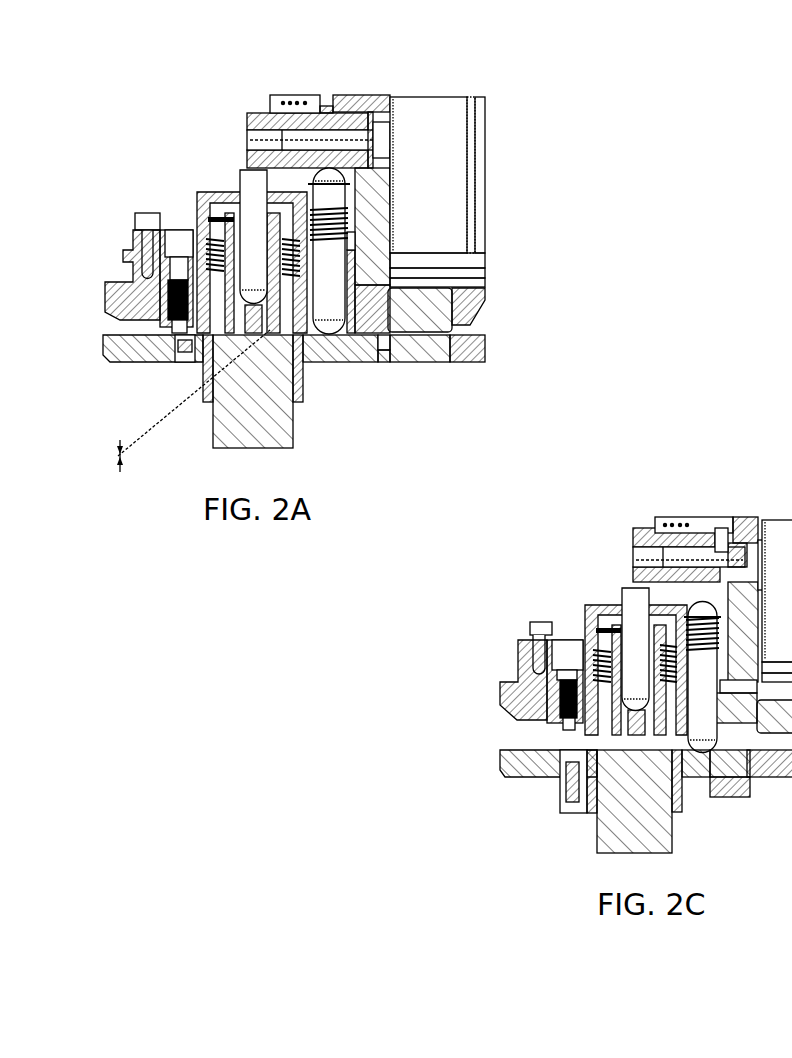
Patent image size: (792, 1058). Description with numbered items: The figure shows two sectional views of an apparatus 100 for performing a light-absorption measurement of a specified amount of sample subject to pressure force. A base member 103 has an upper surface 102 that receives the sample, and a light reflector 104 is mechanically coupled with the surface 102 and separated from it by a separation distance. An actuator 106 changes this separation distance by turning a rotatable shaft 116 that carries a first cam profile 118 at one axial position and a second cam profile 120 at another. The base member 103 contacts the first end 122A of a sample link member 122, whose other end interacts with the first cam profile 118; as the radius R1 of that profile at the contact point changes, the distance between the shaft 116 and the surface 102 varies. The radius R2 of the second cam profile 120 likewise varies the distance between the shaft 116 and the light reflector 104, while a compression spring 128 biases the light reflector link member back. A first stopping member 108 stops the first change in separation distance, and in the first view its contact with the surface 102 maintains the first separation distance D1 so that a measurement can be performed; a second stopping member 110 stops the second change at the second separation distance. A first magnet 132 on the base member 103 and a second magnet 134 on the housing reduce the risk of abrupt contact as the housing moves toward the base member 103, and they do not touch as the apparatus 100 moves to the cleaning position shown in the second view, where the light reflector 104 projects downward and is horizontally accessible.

In FIG. 2A, the apparatus 100 is at (126, 97).
In FIG. 2C, the apparatus 100 is at (503, 520).
In FIG. 2A, the surface 102 is at (252, 338).
In FIG. 2A, the base member 103 is at (485, 350).
In FIG. 2A, the light reflector 104 is at (197, 363).
In FIG. 2A, the actuator 106 is at (443, 96).
In FIG. 2C, the first stopping member 108 is at (712, 738).
In FIG. 2C, the second stopping member 110 is at (668, 741).
In FIG. 2A, the rotatable shaft 116 is at (345, 112).
In FIG. 2A, the first cam profile 118 is at (313, 102).
In FIG. 2A, the second cam profile 120 is at (247, 158).
In FIG. 2A, the sample link member 122 is at (392, 255).
In FIG. 2A, the first end of sample link member 122A is at (327, 362).
In FIG. 2A, the compression spring 128 is at (217, 223).
In FIG. 2A, the first magnet 132 is at (438, 362).
In FIG. 2A, the second magnet 134 is at (452, 305).
In FIG. 2A, the radius of the first cam profile R1 is at (330, 162).
In FIG. 2C, the radius of the first cam profile R1 is at (702, 598).
In FIG. 2A, the radius of the second cam profile R2 is at (247, 157).
In FIG. 2C, the radius of the second cam profile R2 is at (633, 580).
In FIG. 2A, the first separation distance D1 is at (179, 401).